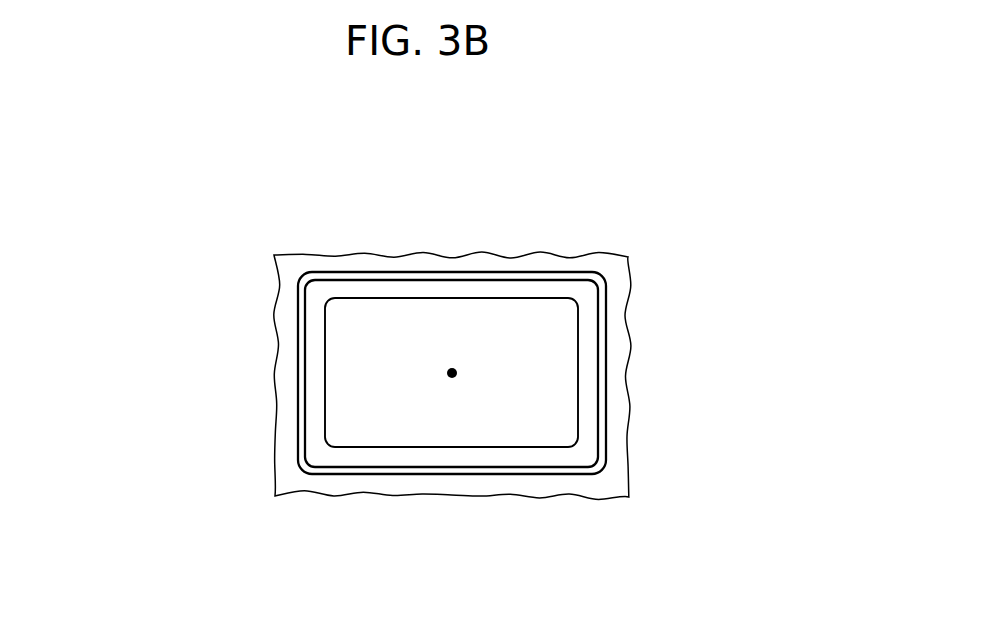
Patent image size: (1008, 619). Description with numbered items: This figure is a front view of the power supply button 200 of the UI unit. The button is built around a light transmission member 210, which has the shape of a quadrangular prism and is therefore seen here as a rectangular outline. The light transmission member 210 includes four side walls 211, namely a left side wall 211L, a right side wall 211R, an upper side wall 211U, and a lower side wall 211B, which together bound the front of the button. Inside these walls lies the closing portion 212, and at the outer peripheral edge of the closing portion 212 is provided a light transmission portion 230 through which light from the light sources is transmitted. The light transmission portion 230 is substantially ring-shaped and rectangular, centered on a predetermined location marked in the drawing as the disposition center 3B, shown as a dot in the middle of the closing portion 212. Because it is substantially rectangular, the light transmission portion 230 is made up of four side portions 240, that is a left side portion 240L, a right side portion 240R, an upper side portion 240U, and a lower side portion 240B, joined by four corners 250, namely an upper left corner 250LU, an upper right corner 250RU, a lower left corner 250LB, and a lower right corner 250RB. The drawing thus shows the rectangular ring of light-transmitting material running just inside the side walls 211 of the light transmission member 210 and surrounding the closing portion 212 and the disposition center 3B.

The power supply button 200 is at (632, 135).
The light transmission member 210 is at (565, 273).
The side walls 211 is at (452, 378).
The upper side wall 211U is at (438, 279).
The left side wall 211L is at (297, 419).
The right side wall 211R is at (598, 423).
The lower side wall 211B is at (520, 467).
The closing portion 212 is at (349, 320).
The light transmission portion 230 is at (357, 288).
The side portions 240 is at (445, 383).
The upper side portion 240U is at (528, 290).
The left side portion 240L is at (317, 365).
The right side portion 240R is at (587, 363).
The lower side portion 240B is at (422, 455).
The corners 250 is at (454, 438).
The upper left corner 250LU is at (317, 290).
The upper right corner 250RU is at (584, 296).
The lower left corner 250LB is at (322, 452).
The lower right corner 250RB is at (583, 448).
The disposition center 3B is at (452, 373).